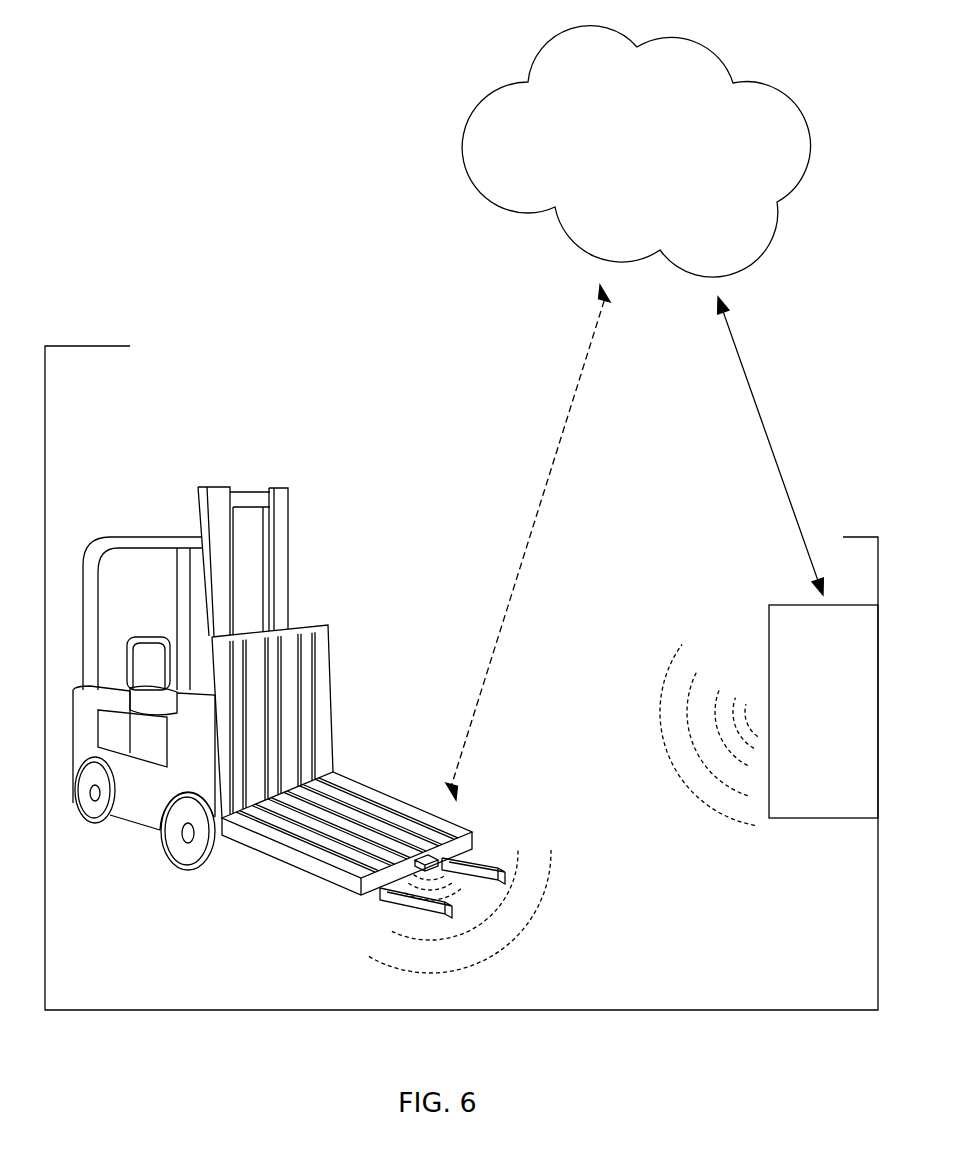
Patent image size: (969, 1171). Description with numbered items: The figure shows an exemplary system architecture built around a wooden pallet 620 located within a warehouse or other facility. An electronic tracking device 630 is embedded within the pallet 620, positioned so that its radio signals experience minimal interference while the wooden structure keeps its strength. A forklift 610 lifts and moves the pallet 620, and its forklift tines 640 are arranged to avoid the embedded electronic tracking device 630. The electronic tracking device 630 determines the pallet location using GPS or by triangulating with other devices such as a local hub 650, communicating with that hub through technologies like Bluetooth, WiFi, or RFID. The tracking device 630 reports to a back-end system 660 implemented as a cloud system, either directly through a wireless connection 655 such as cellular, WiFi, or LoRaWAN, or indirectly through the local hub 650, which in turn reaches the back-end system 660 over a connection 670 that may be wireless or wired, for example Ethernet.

The forklift 610 is at (288, 542).
The pallet 620 is at (310, 875).
The electronic tracking device 630 is at (452, 847).
The forklift tines 640 is at (505, 869).
The local hub 650 is at (769, 715).
The wireless connection 655 is at (528, 542).
The back-end system 660 is at (636, 151).
The connection 670 is at (771, 446).